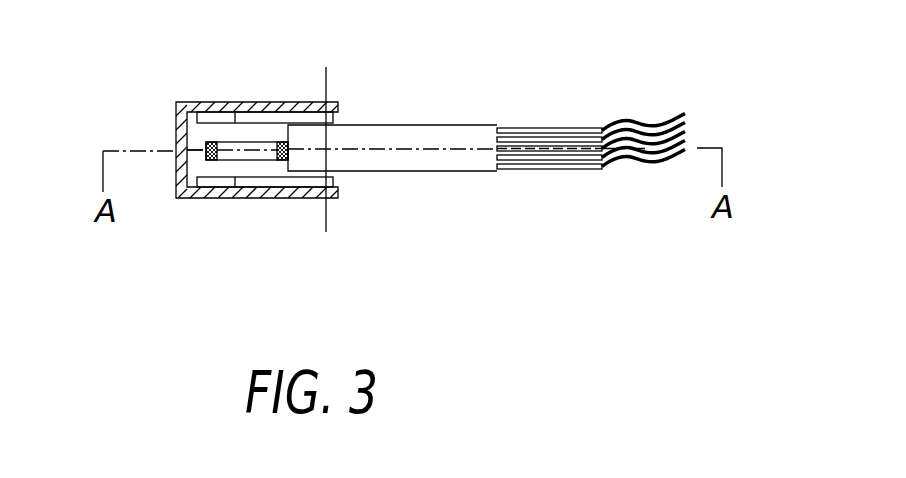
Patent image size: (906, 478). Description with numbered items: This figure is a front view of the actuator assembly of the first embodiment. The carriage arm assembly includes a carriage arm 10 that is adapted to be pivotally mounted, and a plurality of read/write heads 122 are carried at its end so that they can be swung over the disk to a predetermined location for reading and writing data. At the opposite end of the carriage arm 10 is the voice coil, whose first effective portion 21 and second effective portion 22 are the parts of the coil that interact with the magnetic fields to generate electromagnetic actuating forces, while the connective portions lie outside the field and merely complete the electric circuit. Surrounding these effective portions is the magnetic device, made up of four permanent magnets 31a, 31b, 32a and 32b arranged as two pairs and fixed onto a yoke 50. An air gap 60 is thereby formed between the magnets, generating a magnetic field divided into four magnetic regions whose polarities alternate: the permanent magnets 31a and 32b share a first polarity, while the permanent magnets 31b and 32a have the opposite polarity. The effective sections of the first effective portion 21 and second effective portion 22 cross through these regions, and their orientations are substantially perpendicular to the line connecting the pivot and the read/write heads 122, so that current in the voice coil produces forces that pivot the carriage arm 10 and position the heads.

The carriage arm 10 is at (460, 125).
The first effective portion 21 is at (289, 149).
The second effective portion 22 is at (176, 162).
The permanent magnet 31a is at (288, 187).
The permanent magnet 31b is at (337, 107).
The permanent magnet 32a is at (220, 185).
The permanent magnet 32b is at (218, 113).
The yoke 50 is at (210, 113).
The air gap 60 is at (195, 143).
The read/write heads 122 is at (625, 138).